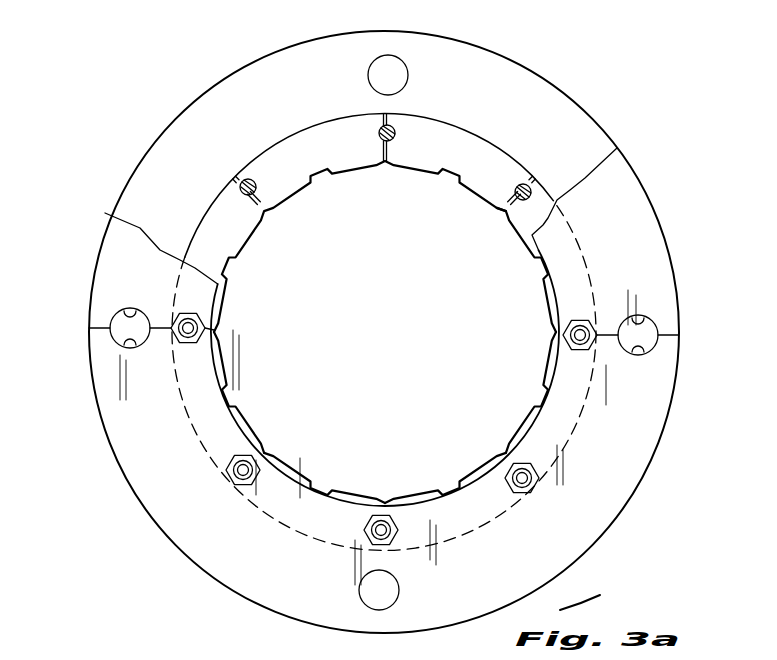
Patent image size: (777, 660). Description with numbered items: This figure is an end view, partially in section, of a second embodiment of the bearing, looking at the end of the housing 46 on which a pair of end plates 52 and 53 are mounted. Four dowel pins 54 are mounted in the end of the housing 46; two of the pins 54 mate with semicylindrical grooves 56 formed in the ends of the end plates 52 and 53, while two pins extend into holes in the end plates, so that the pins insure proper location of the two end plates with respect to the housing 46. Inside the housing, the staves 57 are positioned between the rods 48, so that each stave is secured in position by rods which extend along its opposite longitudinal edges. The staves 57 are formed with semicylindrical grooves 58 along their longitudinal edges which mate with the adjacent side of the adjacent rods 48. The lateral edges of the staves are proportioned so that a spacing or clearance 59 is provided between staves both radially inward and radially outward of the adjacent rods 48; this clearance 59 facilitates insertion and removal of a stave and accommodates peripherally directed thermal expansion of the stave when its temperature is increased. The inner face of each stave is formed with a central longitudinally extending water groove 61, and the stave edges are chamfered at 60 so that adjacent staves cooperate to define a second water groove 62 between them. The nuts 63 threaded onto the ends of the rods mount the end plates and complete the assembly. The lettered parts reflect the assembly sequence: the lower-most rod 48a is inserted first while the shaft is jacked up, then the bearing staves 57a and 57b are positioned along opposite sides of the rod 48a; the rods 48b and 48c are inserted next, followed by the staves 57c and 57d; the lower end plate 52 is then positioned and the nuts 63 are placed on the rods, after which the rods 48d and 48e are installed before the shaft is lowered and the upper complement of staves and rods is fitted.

The housing 46 is at (197, 121).
The rods 48 is at (396, 135).
The lower-most rod 48a is at (387, 531).
The rod 48b is at (243, 479).
The rod 48c is at (532, 481).
The rod 48d is at (205, 326).
The rod 48e is at (575, 335).
The end plate 52 is at (594, 543).
The end plate 53 is at (633, 184).
The dowel pins 54 is at (368, 72).
The semicylindrical grooves 56 is at (130, 308).
The staves 57 is at (287, 144).
The bearing stave 57a is at (300, 471).
The bearing stave 57b is at (466, 477).
The stave 57c is at (252, 411).
The stave 57d is at (532, 403).
The semicylindrical grooves 58 is at (256, 191).
The clearance 59 is at (392, 117).
The chamfer 60 is at (506, 225).
The water groove 61 is at (322, 178).
The second water groove 62 is at (268, 215).
The nuts 63 is at (196, 346).